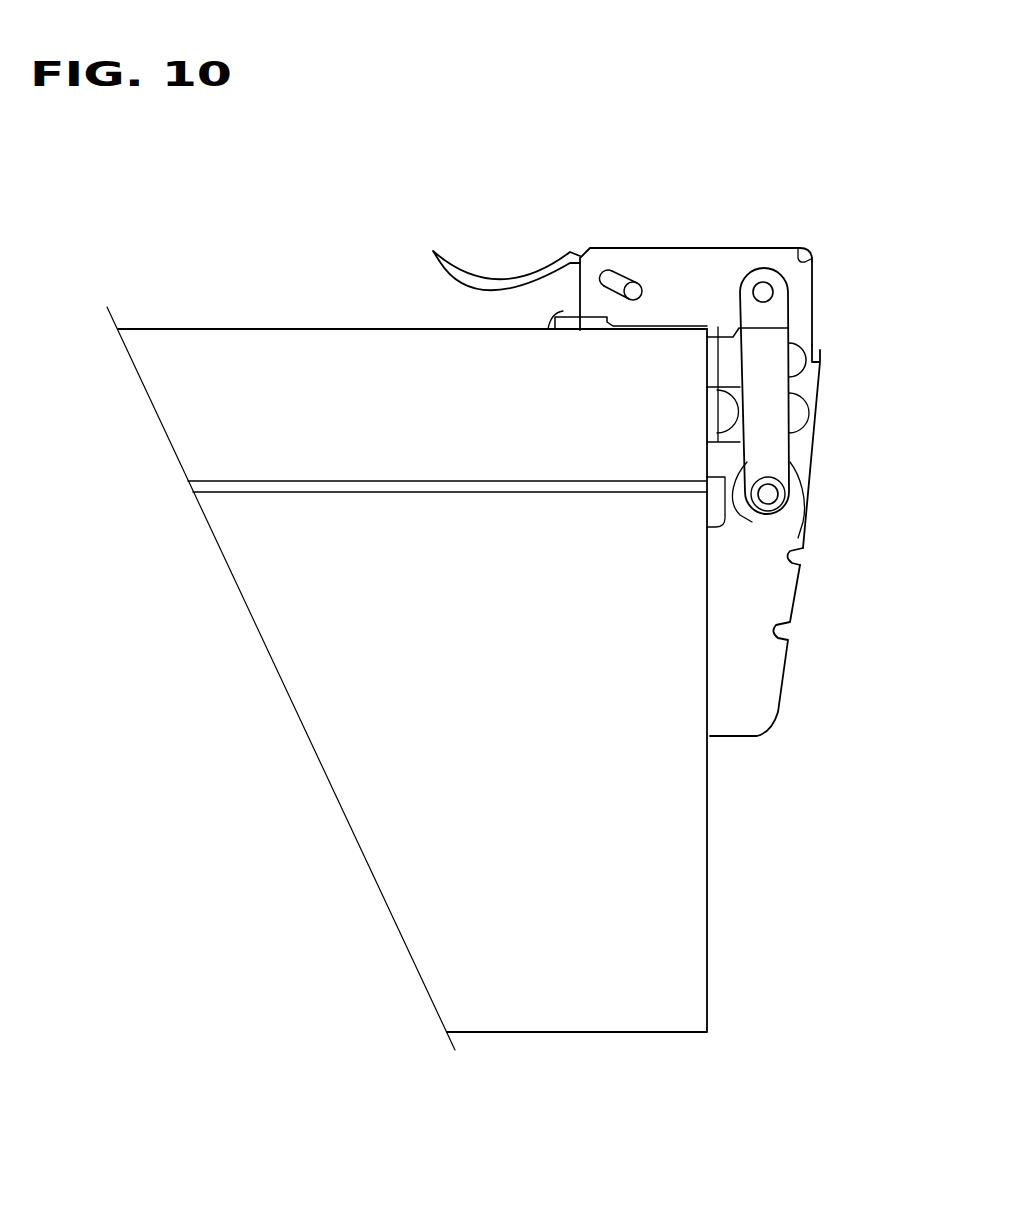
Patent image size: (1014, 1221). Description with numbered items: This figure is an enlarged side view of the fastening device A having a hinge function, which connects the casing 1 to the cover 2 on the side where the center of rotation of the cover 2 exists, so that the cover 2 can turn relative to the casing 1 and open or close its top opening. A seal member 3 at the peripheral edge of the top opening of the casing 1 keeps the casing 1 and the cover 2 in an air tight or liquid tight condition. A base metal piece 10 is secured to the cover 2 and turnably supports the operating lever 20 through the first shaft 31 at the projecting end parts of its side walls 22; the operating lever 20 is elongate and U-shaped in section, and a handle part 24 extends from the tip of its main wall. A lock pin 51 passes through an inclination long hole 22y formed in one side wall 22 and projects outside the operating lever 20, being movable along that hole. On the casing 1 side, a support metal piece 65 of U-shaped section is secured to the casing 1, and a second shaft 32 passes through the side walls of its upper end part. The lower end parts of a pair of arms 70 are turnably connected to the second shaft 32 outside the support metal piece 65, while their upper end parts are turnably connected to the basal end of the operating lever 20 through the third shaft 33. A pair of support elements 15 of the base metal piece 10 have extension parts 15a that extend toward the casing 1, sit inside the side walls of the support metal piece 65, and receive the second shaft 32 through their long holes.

The casing 1 is at (301, 703).
The cover 2 is at (218, 342).
The seal member 3 is at (383, 494).
The base metal piece 10 is at (562, 312).
The support element 15 is at (815, 407).
The extension part 15a is at (815, 469).
The operating lever 20 is at (705, 249).
The side wall 22 is at (665, 258).
The inclination long hole 22y is at (612, 262).
The handle part 24 is at (465, 265).
The first shaft 31 is at (800, 352).
The second shaft 32 is at (772, 497).
The third shaft 33 is at (768, 293).
The lock pin 51 is at (632, 298).
The support metal piece 65 is at (772, 689).
The arm 70 is at (778, 438).
The fastening device A is at (749, 237).